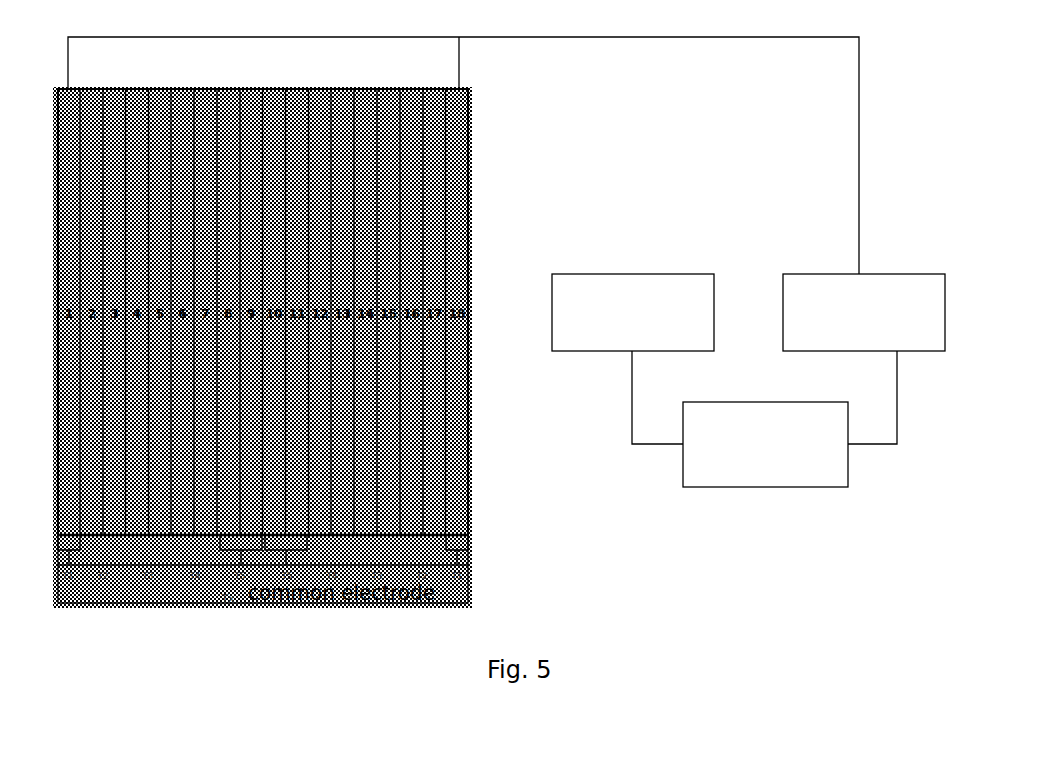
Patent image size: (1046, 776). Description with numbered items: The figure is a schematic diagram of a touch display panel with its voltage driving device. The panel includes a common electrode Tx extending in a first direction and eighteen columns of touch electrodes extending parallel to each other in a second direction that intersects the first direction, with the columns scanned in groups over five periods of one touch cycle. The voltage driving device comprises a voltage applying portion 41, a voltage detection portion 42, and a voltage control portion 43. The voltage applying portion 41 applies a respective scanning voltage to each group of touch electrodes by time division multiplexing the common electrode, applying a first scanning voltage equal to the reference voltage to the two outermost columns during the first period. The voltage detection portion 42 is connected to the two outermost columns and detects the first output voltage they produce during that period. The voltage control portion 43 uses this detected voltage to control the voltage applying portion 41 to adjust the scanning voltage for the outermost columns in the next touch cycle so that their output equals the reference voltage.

The voltage applying portion 41 is at (647, 274).
The voltage detection portion 42 is at (878, 274).
The voltage control portion 43 is at (812, 402).